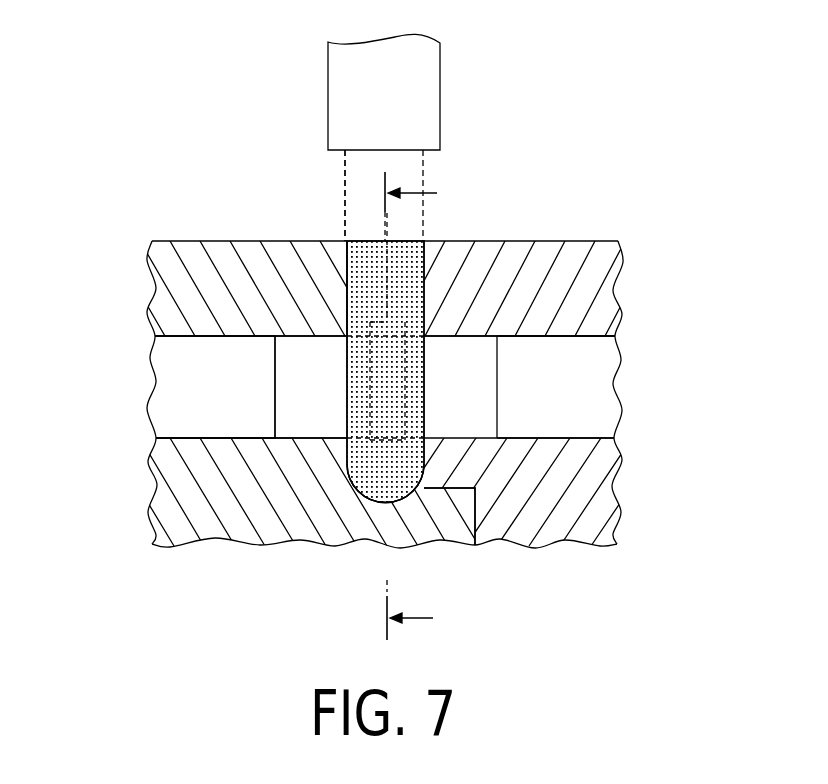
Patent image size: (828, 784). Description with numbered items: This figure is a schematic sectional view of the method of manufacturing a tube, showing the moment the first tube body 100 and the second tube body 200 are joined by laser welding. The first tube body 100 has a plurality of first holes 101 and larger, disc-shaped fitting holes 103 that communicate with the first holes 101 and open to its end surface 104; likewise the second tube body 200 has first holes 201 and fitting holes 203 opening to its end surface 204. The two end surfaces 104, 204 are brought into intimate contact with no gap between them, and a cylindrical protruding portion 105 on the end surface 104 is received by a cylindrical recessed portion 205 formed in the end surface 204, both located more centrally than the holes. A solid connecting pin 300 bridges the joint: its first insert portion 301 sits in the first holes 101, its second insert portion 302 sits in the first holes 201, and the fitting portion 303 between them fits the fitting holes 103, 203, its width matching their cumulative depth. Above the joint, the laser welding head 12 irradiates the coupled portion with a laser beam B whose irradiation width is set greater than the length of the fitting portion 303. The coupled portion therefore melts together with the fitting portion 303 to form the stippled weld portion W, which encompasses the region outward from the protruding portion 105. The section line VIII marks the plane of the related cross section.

The laser welding head 12 is at (428, 73).
The first tube body 100 is at (183, 241).
The second tube body 200 is at (568, 241).
The connecting pin 300 is at (458, 334).
The end surface 104 is at (345, 240).
The end surface 204 is at (387, 285).
The first holes 101 is at (156, 380).
The fitting holes 103 is at (345, 345).
The first insert portion 301 is at (296, 394).
The fitting portion 303 is at (345, 410).
The first holes 201 is at (605, 380).
The fitting holes 203 is at (424, 358).
The second insert portion 302 is at (478, 410).
The protruding portion 105 is at (523, 505).
The recessed portion 205 is at (470, 496).
The weld portion W is at (362, 293).
The laser beam B is at (378, 505).
The section line VIII is at (423, 406).